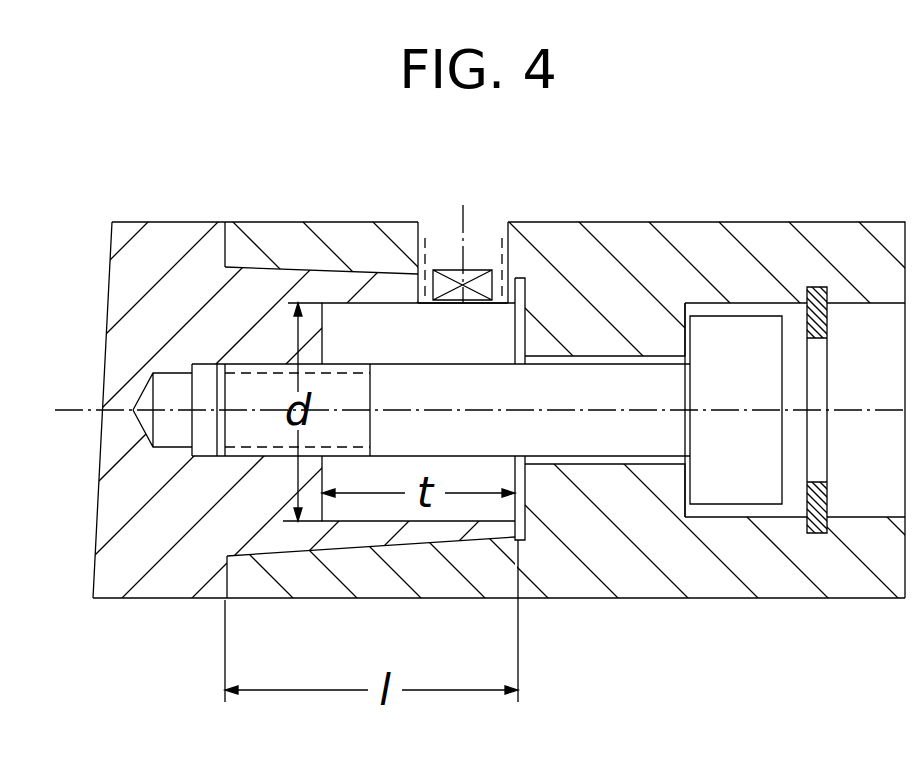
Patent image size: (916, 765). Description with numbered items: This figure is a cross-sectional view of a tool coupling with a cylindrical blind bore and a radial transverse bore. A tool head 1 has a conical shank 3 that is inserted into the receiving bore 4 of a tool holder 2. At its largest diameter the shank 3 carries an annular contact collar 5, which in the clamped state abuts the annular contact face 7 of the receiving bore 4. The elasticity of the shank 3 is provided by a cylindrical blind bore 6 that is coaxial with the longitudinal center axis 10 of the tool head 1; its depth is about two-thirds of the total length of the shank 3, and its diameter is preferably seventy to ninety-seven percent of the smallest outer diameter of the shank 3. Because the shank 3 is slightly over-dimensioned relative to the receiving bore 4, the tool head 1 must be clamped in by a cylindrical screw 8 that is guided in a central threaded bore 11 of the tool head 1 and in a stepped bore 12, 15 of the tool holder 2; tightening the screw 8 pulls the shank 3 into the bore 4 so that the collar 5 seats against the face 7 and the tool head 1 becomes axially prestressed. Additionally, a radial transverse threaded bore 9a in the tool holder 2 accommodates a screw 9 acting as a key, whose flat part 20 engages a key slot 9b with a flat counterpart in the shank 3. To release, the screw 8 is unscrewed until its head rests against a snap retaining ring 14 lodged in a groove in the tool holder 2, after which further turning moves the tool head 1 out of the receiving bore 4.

The tool head 1 is at (148, 587).
The tool holder 2 is at (806, 578).
The conical shank 3 is at (333, 541).
The receiving bore 4 is at (389, 268).
The annular contact collar 5 is at (226, 575).
The blind bore 6 is at (348, 318).
The annular contact face 7 is at (226, 250).
The cylindrical screw 8 is at (600, 405).
The screw 9 is at (484, 235).
The radial transverse threaded bore 9a is at (507, 250).
The key slot 9b is at (410, 292).
The longitudinal center axis 10 is at (68, 430).
The central threaded bore 11 is at (258, 345).
The stepped bore 12 is at (597, 463).
The snap retaining ring 14 is at (832, 525).
The stepped bore 15 is at (762, 512).
The flat part 20 is at (458, 290).